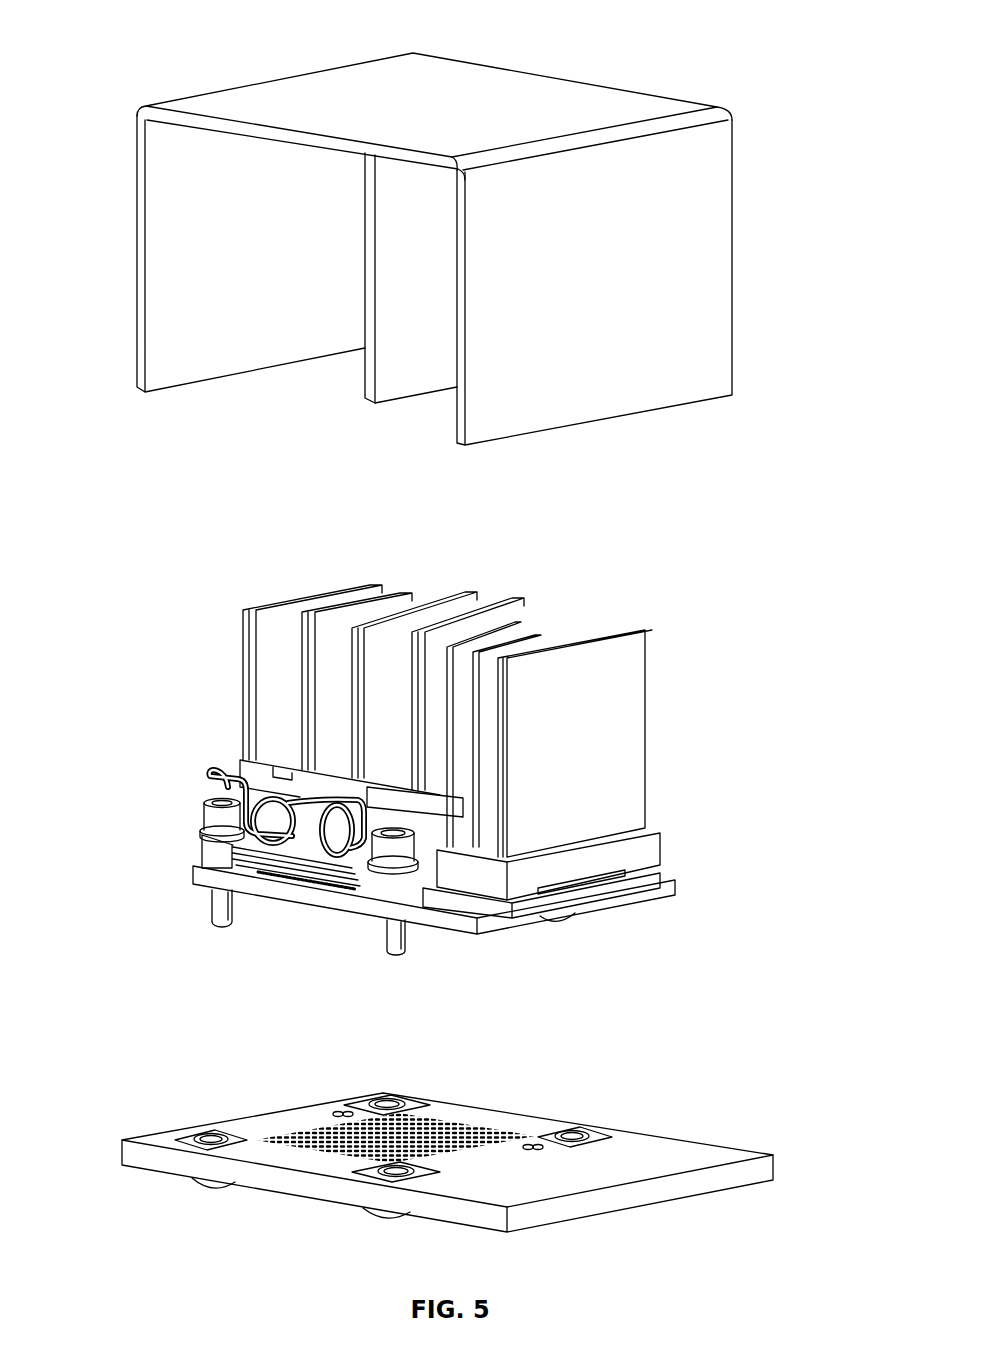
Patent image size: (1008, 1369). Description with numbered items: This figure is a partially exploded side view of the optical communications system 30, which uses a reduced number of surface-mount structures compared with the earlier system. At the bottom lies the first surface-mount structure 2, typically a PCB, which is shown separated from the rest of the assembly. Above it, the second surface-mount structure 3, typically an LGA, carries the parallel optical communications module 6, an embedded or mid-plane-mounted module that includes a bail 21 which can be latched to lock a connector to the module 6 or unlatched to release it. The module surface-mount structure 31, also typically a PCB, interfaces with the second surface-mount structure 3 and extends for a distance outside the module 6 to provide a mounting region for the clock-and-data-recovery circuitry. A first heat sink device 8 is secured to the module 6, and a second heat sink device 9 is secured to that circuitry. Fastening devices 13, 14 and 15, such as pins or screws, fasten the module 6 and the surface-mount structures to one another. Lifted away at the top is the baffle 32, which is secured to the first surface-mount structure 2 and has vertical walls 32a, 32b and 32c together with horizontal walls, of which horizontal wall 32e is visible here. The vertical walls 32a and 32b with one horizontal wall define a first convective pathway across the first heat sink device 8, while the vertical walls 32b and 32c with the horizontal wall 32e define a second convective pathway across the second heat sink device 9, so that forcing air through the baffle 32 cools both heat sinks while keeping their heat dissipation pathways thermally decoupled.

The first surface-mount structure 2 is at (673, 1148).
The second surface-mount structure 3 is at (323, 898).
The parallel optical communications module 6 is at (205, 852).
The first heat sink device 8 is at (438, 593).
The second heat sink device 9 is at (610, 622).
The fastening device 13 is at (218, 902).
The fastening device 14 is at (212, 1185).
The fastening device 15 is at (220, 802).
The bail 21 is at (235, 770).
The optical communications system 30 is at (260, 47).
The module surface-mount structure 31 is at (613, 890).
The baffle 32 is at (575, 105).
The vertical wall 32a is at (333, 290).
The vertical wall 32b is at (433, 283).
The vertical wall 32c is at (720, 298).
The horizontal wall 32e is at (433, 167).